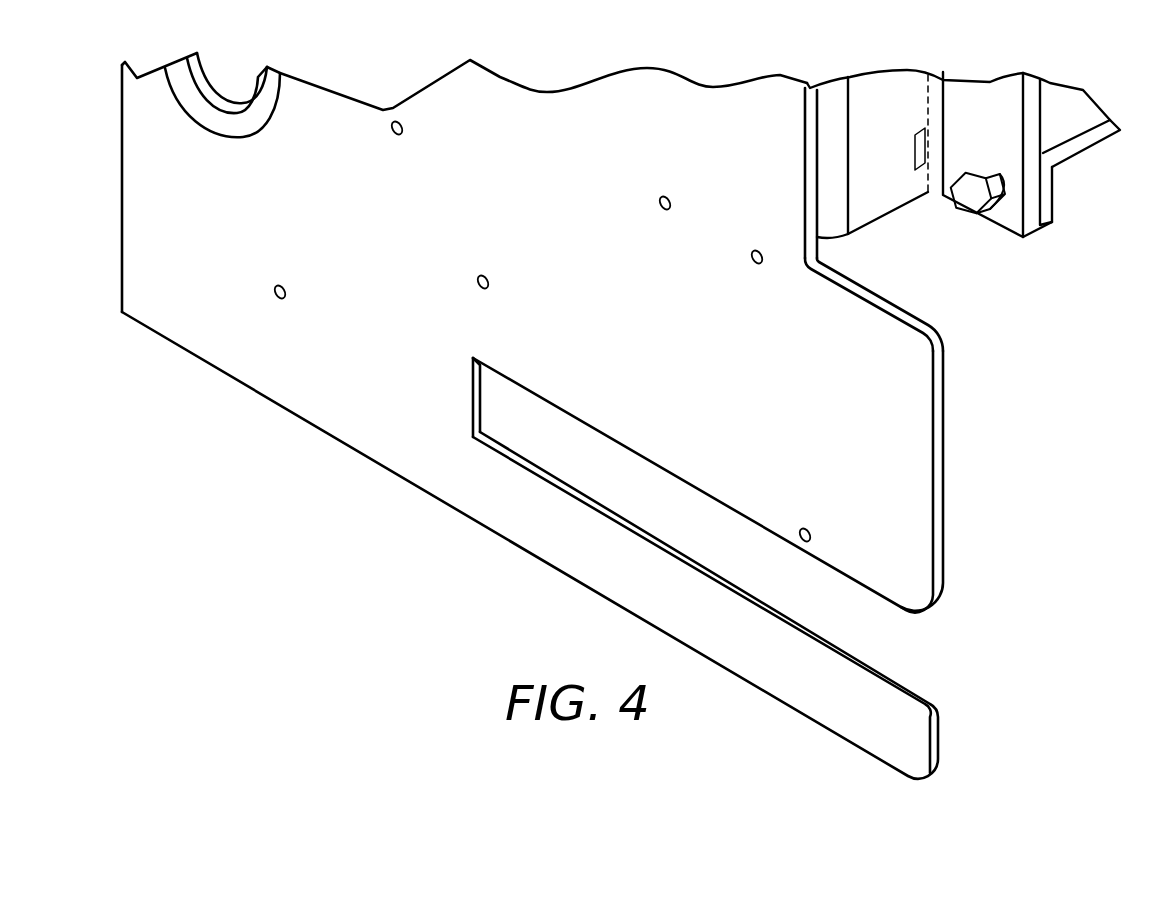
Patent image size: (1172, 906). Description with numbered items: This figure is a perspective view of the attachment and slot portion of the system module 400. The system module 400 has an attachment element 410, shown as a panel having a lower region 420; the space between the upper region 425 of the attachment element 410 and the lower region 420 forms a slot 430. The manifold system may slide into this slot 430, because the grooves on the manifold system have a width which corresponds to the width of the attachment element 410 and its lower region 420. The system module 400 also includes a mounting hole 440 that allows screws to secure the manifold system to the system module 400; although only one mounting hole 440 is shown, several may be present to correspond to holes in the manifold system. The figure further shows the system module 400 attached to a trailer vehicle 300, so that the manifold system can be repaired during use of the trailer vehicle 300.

The trailer vehicle 300 is at (985, 105).
The system module 400 is at (1060, 391).
The attachment element 410 is at (898, 527).
The lower region 420 is at (833, 713).
The upper region 425 is at (842, 328).
The slot 430 is at (910, 637).
The mounting hole 440 is at (804, 530).